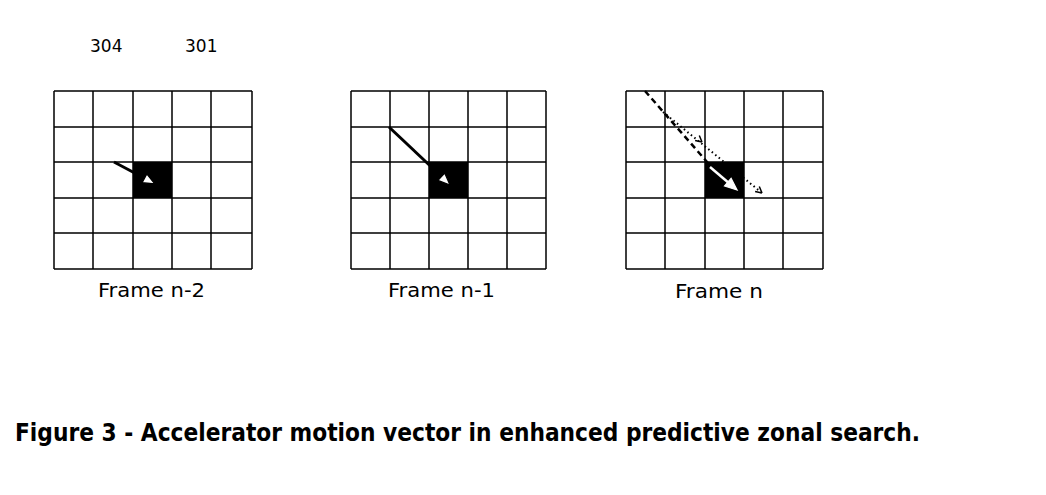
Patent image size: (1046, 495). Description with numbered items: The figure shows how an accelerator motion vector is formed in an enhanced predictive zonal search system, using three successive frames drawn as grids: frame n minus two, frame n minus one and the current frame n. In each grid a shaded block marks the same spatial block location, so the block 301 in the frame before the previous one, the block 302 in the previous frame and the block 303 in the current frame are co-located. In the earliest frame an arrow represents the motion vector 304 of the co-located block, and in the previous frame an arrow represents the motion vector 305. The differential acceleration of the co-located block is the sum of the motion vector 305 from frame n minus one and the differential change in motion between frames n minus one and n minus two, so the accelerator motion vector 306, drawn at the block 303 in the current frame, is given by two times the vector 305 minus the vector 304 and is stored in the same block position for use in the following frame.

The block 301 is at (157, 163).
The block 302 is at (457, 163).
The block 303 is at (737, 163).
The motion vector 304 is at (137, 168).
The motion vector 305 is at (440, 170).
The accelerator motion vector 306 is at (693, 148).